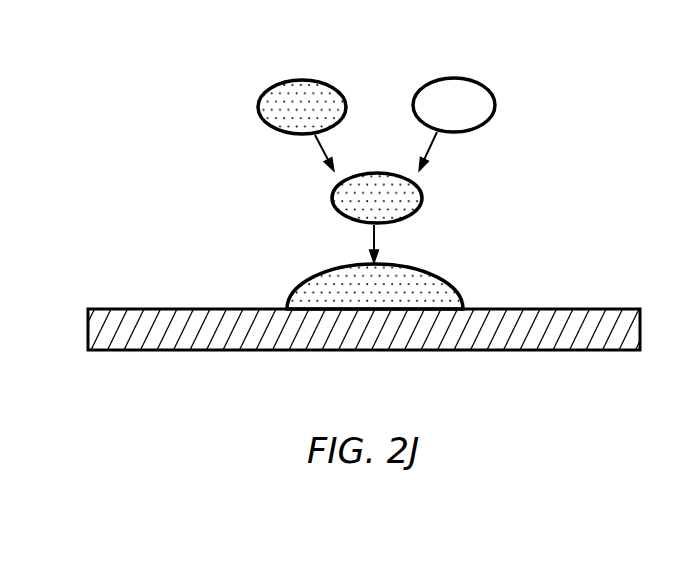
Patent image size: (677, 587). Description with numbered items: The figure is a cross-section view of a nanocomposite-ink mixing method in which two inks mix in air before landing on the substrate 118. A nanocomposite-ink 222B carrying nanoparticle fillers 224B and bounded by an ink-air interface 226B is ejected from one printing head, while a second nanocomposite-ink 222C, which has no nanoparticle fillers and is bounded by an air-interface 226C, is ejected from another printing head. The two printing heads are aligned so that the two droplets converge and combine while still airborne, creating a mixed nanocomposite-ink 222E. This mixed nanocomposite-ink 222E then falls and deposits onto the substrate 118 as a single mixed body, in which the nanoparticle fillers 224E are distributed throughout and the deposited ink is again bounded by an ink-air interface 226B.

The substrate 118 is at (413, 342).
The nanocomposite-ink 222B is at (262, 76).
The nanoparticle fillers 224B is at (287, 114).
The ink-air interface 226B is at (259, 101).
The nanocomposite-ink 222C is at (445, 68).
The air-interface 226C is at (487, 82).
The nanocomposite-ink 222E is at (320, 204).
The nanoparticle fillers 224E is at (408, 290).